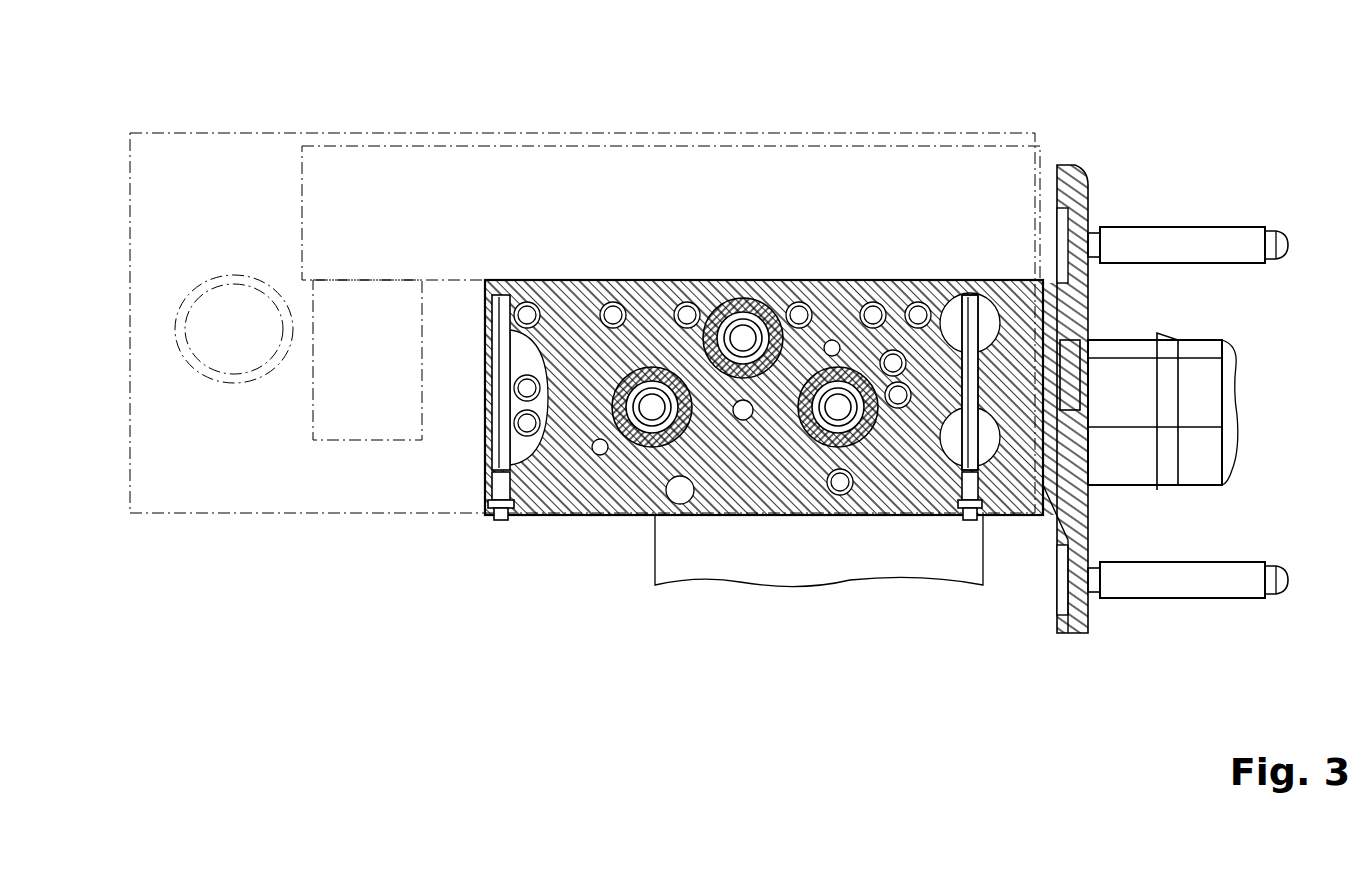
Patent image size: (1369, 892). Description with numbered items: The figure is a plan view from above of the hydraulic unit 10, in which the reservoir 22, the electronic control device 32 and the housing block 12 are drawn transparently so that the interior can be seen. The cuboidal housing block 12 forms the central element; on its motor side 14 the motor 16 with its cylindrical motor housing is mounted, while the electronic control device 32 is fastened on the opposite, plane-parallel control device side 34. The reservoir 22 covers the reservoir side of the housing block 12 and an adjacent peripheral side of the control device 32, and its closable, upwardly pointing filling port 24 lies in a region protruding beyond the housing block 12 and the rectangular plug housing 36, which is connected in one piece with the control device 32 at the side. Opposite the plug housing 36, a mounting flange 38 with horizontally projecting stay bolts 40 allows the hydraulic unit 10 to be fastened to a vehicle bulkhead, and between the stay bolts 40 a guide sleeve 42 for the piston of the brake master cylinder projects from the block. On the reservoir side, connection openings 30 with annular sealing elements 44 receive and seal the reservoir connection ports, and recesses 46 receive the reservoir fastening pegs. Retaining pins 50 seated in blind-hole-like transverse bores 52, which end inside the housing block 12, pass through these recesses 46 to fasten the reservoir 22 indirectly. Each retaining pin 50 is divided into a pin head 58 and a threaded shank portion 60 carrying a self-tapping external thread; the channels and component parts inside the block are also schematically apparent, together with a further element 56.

The hydraulic unit 10 is at (866, 606).
The housing block 12 is at (615, 518).
The motor side 14 is at (565, 518).
The motor 16 is at (808, 563).
The reservoir 22 is at (256, 146).
The filling port 24 is at (230, 287).
The connection opening 30 is at (640, 397).
The electronic control device 32 is at (368, 160).
The control device side 34 is at (560, 282).
The plug housing 36 is at (368, 428).
The mounting flange 38 is at (1088, 180).
The stay bolt 40 is at (1222, 246).
The guide sleeve 42 is at (1138, 466).
The annular sealing element 44 is at (632, 365).
The recess 46 is at (512, 352).
The retaining pin 50 is at (485, 335).
The transverse bore 52 is at (493, 296).
The nut 56 is at (507, 518).
The pin head 58 is at (478, 518).
The shank portion 60 is at (505, 393).